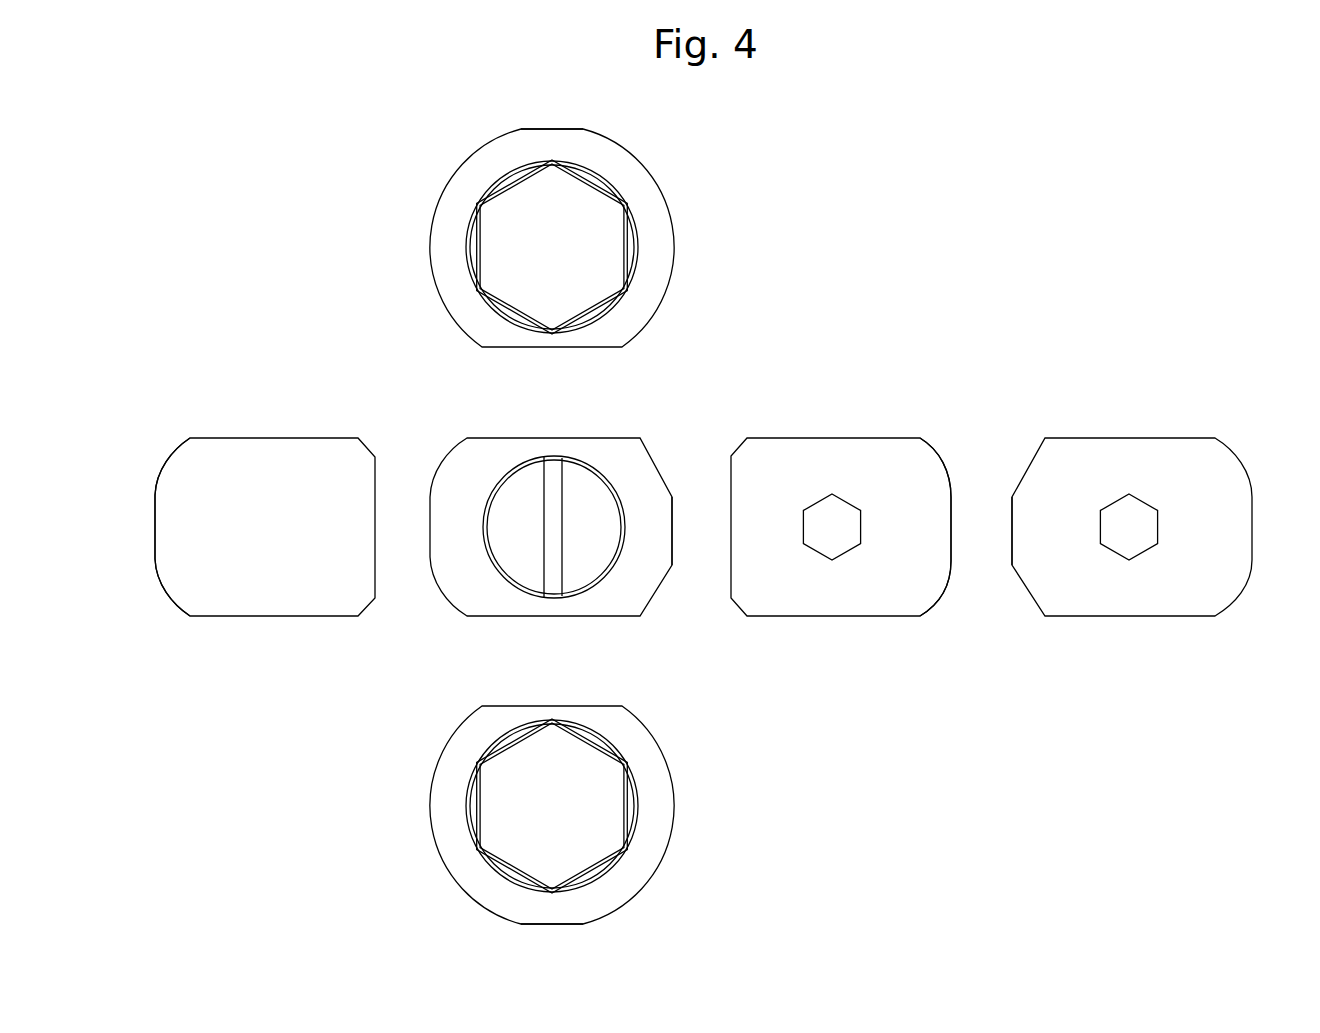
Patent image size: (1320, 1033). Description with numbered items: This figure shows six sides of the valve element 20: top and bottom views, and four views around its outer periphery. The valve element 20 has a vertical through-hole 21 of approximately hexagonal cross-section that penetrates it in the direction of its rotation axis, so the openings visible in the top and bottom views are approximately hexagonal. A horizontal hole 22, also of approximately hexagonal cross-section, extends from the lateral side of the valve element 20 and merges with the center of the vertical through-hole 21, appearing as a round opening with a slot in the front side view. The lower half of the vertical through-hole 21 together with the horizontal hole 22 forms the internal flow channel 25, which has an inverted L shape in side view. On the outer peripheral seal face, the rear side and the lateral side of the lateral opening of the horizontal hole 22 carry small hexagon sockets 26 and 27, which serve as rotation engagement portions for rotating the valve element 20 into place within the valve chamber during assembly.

The valve element 20 is at (648, 164).
The vertical through-hole 21 is at (499, 304).
The horizontal hole 22 is at (613, 555).
The internal flow channel 25 is at (500, 526).
The hexagon socket 26 is at (540, 128).
The hexagon socket 27 is at (675, 253).